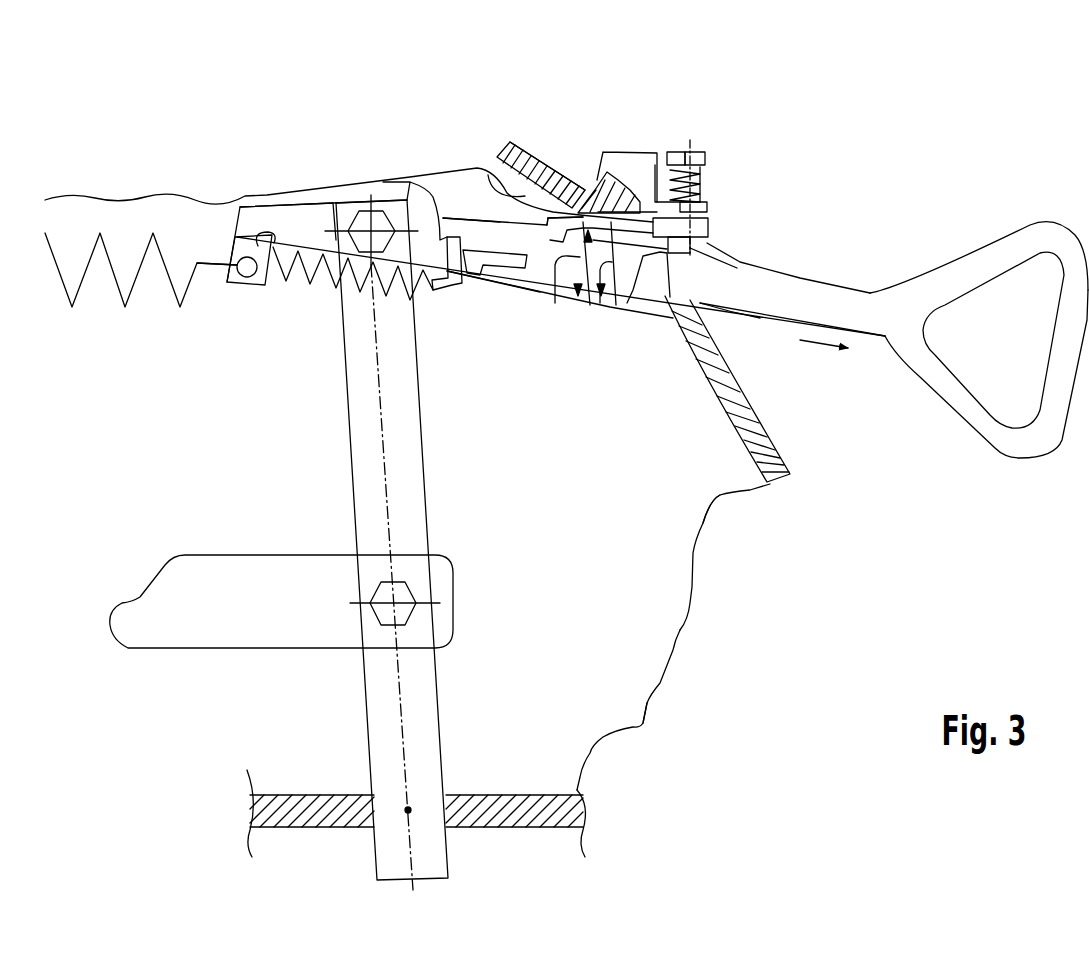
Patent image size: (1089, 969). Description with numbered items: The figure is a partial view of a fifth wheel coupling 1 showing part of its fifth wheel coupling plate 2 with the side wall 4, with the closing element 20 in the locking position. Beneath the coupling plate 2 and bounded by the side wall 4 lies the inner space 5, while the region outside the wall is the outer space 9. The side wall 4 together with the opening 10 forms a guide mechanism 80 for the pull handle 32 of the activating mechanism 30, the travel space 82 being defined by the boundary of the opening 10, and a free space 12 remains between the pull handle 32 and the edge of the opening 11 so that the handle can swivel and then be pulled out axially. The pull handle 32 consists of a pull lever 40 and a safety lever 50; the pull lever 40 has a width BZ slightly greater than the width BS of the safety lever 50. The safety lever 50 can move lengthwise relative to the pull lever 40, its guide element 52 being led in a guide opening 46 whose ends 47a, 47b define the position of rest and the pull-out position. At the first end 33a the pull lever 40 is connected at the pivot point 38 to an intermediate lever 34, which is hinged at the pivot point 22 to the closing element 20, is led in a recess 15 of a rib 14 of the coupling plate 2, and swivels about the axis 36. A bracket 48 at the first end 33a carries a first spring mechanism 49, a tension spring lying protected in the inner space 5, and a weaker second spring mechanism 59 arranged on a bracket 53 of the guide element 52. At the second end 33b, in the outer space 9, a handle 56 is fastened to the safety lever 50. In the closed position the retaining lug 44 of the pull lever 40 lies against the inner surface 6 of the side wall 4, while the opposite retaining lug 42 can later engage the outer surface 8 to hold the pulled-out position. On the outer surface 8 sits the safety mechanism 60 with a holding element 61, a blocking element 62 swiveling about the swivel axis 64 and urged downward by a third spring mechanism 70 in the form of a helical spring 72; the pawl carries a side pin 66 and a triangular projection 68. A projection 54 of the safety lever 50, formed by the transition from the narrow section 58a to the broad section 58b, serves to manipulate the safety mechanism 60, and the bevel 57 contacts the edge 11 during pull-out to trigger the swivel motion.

The fifth wheel coupling 1 is at (728, 540).
The fifth wheel coupling plate 2 is at (680, 630).
The side wall 4 is at (562, 160).
The inner space 5 is at (636, 484).
The inner surface 6 is at (513, 140).
The outer surface 8 is at (527, 183).
The outer space 9 is at (820, 452).
The opening 10 is at (520, 176).
The edge of the opening 11 is at (630, 178).
The free space 12 is at (590, 192).
The rib 14 is at (540, 807).
The recess 15 is at (367, 833).
The closing element 20 is at (229, 630).
The pivot point 22 is at (415, 598).
The activating mechanism 30 is at (218, 422).
The pull handle 32 is at (497, 330).
The first end 33a is at (323, 186).
The second end 33b is at (880, 385).
The intermediate lever 34 is at (387, 720).
The axis 36 is at (411, 808).
The pivot point 38 is at (392, 205).
The pull lever 40 is at (273, 217).
The retaining lug 42 is at (486, 217).
The retaining lug 44 is at (673, 315).
The guide opening 46 is at (430, 290).
The end of the guide opening 47a is at (433, 177).
The end of the guide opening 47b is at (541, 298).
The bracket 48 is at (251, 290).
The first spring mechanism 49 is at (150, 297).
The safety lever 50 is at (857, 307).
The guide element 52 is at (480, 277).
The bracket 53 is at (455, 290).
The projection 54 is at (640, 310).
The handle 56 is at (1015, 443).
The bevel 57 is at (627, 303).
The narrow section 58a is at (778, 296).
The broad section 58b is at (604, 292).
The second spring mechanism 59 is at (318, 292).
The safety mechanism 60 is at (713, 193).
The holding element 61 is at (654, 168).
The blocking element 62 is at (714, 224).
The swivel axis 64 is at (710, 205).
The pin 66 is at (710, 238).
The projection 68 is at (710, 254).
The third spring mechanism 70 is at (708, 184).
The helical spring 72 is at (713, 165).
The guide mechanism 80 is at (612, 165).
The travel space 82 is at (573, 214).
The width of the pull lever BZ is at (573, 292).
The width of the safety lever BS is at (595, 302).